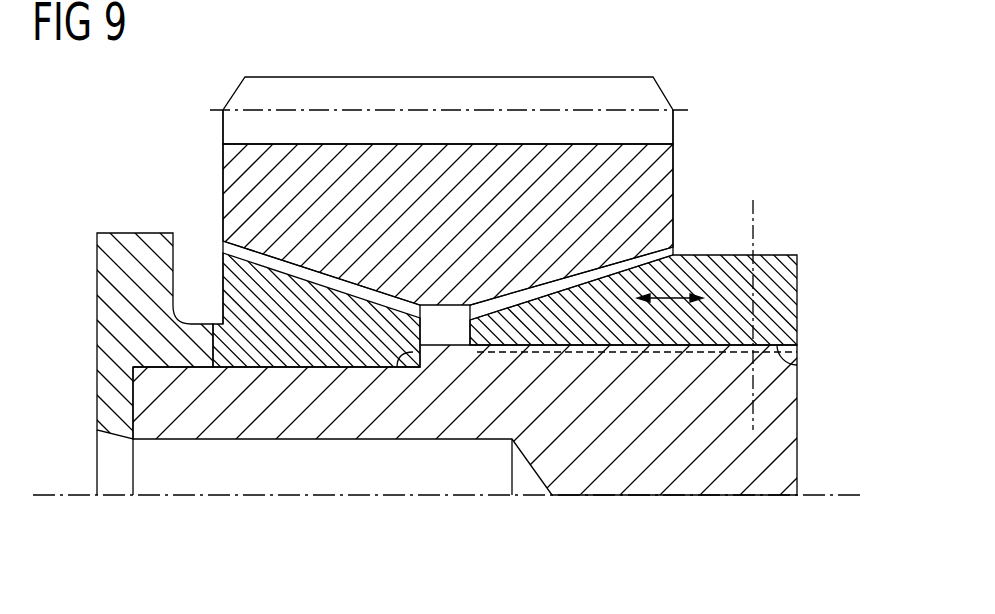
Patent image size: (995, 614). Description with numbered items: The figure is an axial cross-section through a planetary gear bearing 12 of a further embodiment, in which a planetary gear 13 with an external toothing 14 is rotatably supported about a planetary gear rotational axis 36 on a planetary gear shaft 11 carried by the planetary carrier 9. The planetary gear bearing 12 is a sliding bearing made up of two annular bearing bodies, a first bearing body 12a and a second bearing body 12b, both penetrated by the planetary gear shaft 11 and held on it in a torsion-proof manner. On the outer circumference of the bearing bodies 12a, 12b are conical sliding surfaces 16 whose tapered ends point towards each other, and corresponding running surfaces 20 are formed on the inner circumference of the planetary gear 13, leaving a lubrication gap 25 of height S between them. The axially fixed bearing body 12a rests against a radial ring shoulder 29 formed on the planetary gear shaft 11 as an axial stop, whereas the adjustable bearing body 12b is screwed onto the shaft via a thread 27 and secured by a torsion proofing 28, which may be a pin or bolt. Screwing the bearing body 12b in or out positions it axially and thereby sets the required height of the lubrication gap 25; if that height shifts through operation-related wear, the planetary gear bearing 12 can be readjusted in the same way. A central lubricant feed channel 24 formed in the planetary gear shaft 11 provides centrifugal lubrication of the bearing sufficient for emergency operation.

The planetary carrier 9 is at (104, 296).
The planetary gear shaft 11 is at (706, 465).
The planetary gear bearing 12 is at (688, 233).
The first bearing body 12a is at (290, 338).
The second bearing body 12b is at (783, 299).
The planetary gear 13 is at (518, 175).
The external toothing 14 is at (452, 97).
The sliding surface 16 is at (600, 278).
The running surface 20 is at (563, 279).
The central lubricant feed channel 24 is at (108, 463).
The lubrication gap 25 is at (325, 277).
The thread 27 is at (795, 368).
The torsion proofing 28 is at (755, 212).
The radial ring shoulder 29 is at (396, 362).
The planetary gear rotational axis 36 is at (843, 497).